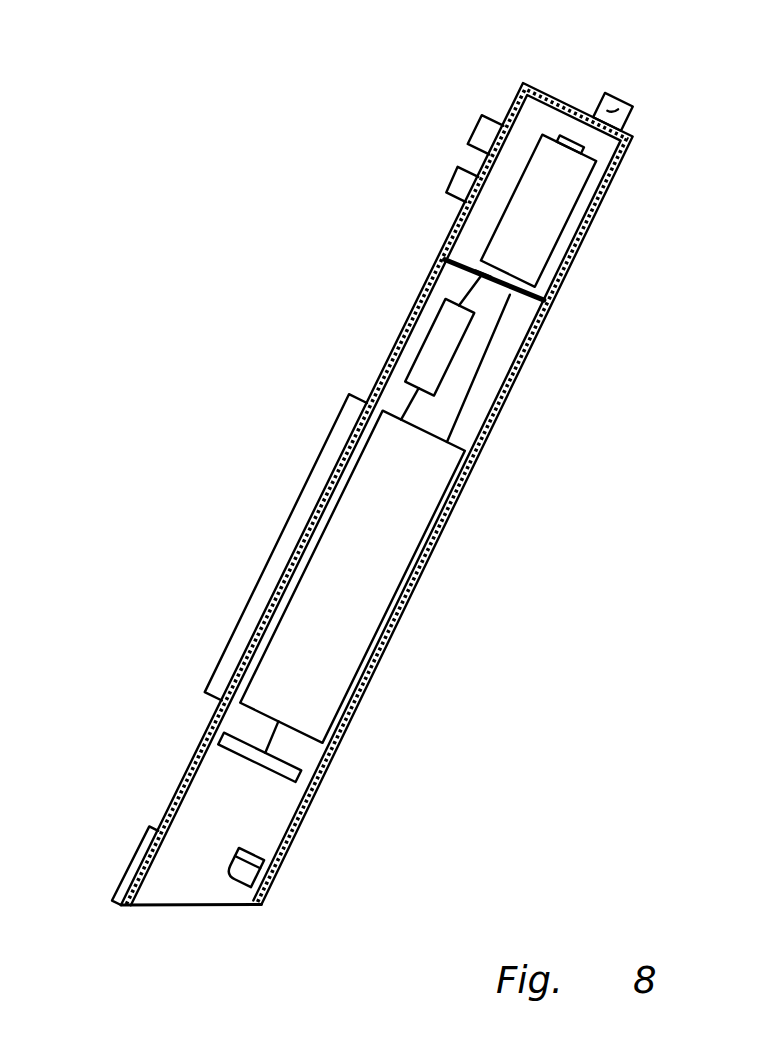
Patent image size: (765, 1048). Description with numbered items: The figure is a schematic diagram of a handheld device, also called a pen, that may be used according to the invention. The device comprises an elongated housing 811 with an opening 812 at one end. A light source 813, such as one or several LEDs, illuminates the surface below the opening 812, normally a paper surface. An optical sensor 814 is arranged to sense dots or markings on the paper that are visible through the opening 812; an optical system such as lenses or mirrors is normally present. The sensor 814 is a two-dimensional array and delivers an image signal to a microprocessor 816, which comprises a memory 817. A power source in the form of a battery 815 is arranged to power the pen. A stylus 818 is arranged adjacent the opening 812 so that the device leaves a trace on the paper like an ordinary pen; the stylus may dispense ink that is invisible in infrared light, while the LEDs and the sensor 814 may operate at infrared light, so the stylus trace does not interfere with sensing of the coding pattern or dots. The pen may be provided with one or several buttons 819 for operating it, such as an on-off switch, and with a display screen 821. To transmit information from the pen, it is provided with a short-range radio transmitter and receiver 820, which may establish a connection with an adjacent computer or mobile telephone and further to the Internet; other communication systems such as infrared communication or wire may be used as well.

The housing 811 is at (473, 477).
The opening 812 is at (187, 907).
The light source 813 is at (258, 880).
The optical sensor 814 is at (305, 770).
The battery 815 is at (535, 220).
The microprocessor 816 is at (353, 617).
The memory 817 is at (432, 355).
The stylus 818 is at (140, 853).
The buttons 819 is at (470, 145).
The short-range radio transmitter and receiver 820 is at (630, 102).
The display screen 821 is at (290, 540).